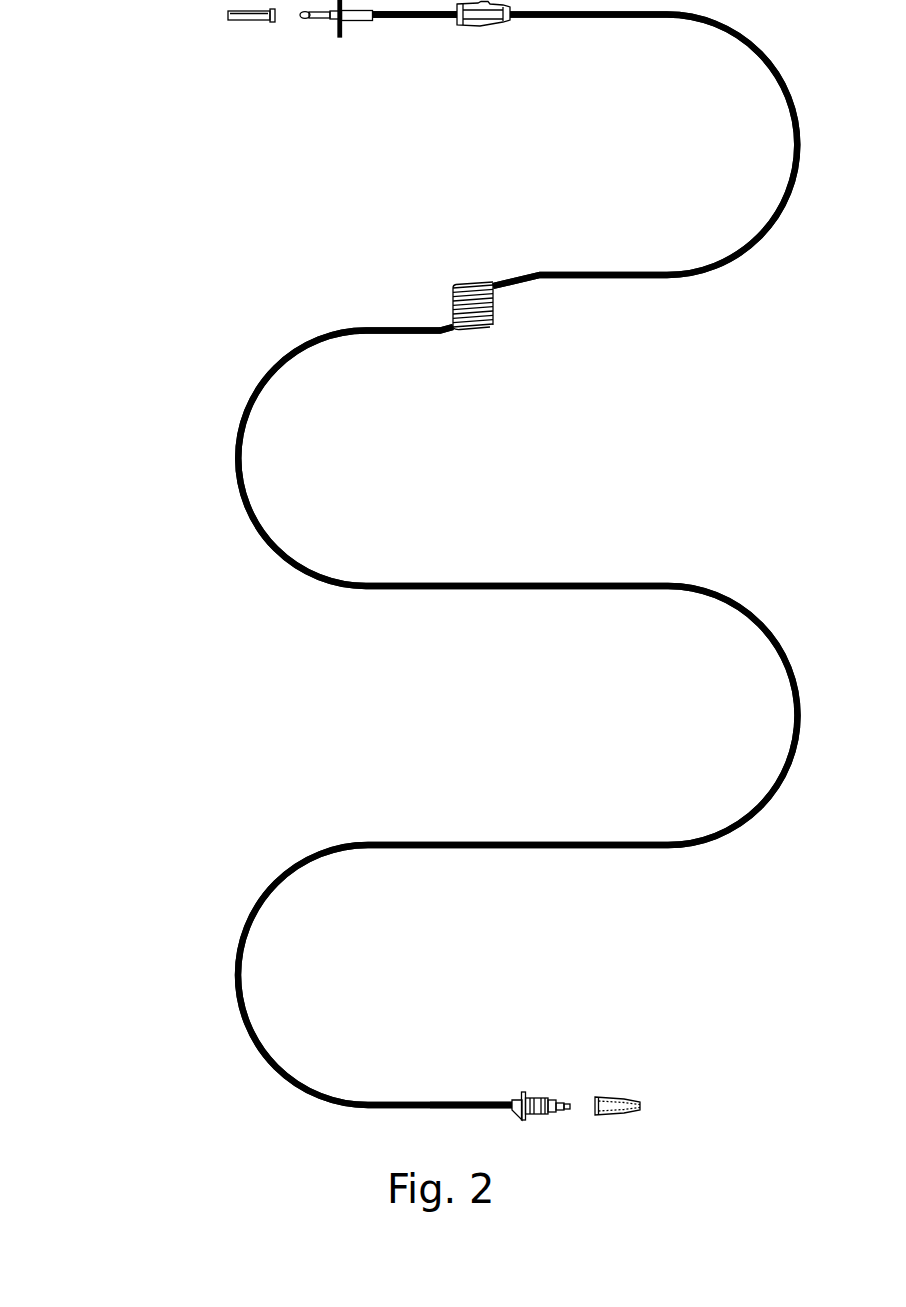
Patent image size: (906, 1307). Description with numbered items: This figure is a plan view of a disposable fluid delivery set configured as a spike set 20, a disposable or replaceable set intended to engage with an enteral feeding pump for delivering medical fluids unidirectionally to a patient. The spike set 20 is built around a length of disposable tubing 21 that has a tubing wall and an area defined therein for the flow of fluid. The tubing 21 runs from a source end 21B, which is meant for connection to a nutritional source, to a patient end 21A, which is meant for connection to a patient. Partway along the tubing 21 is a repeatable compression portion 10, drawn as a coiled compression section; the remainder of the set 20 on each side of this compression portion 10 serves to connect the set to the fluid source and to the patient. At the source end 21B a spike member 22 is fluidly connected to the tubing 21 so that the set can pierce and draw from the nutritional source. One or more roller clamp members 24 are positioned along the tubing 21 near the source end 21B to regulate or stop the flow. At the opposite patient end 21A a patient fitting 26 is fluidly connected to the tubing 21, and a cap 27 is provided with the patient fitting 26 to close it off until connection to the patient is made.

The compression portion 10 is at (495, 338).
The spike set 20 is at (138, 646).
The disposable tubing 21 is at (312, 580).
The patient end 21A is at (428, 1103).
The source end 21B is at (397, 18).
The spike member 22 is at (310, 20).
The roller clamp member 24 is at (502, 22).
The patient fitting 26 is at (556, 1101).
The cap 27 is at (623, 1102).